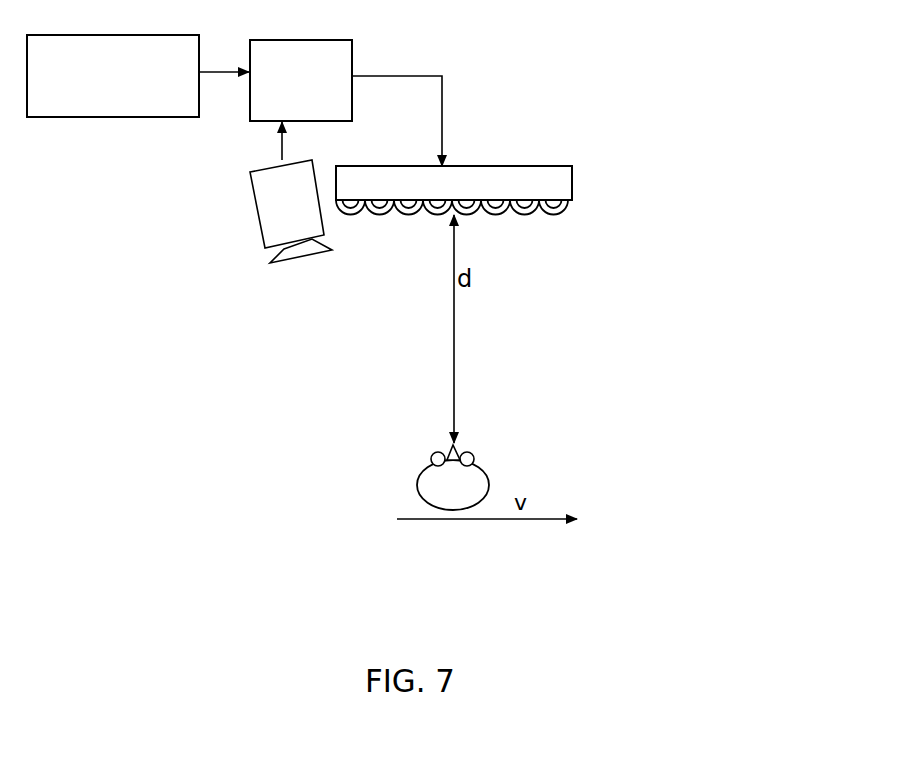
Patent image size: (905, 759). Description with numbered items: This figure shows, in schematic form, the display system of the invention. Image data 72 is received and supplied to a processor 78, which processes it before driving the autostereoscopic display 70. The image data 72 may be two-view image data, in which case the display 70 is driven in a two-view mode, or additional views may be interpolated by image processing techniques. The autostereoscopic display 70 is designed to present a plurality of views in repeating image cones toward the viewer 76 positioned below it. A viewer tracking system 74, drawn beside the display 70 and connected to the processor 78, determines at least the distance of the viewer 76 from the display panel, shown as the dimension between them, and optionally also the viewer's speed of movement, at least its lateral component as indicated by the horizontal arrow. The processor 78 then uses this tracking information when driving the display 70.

The autostereoscopic display 70 is at (553, 146).
The image data 72 is at (163, 112).
The viewer tracking system 74 is at (257, 225).
The viewer 76 is at (417, 487).
The processor 78 is at (347, 59).